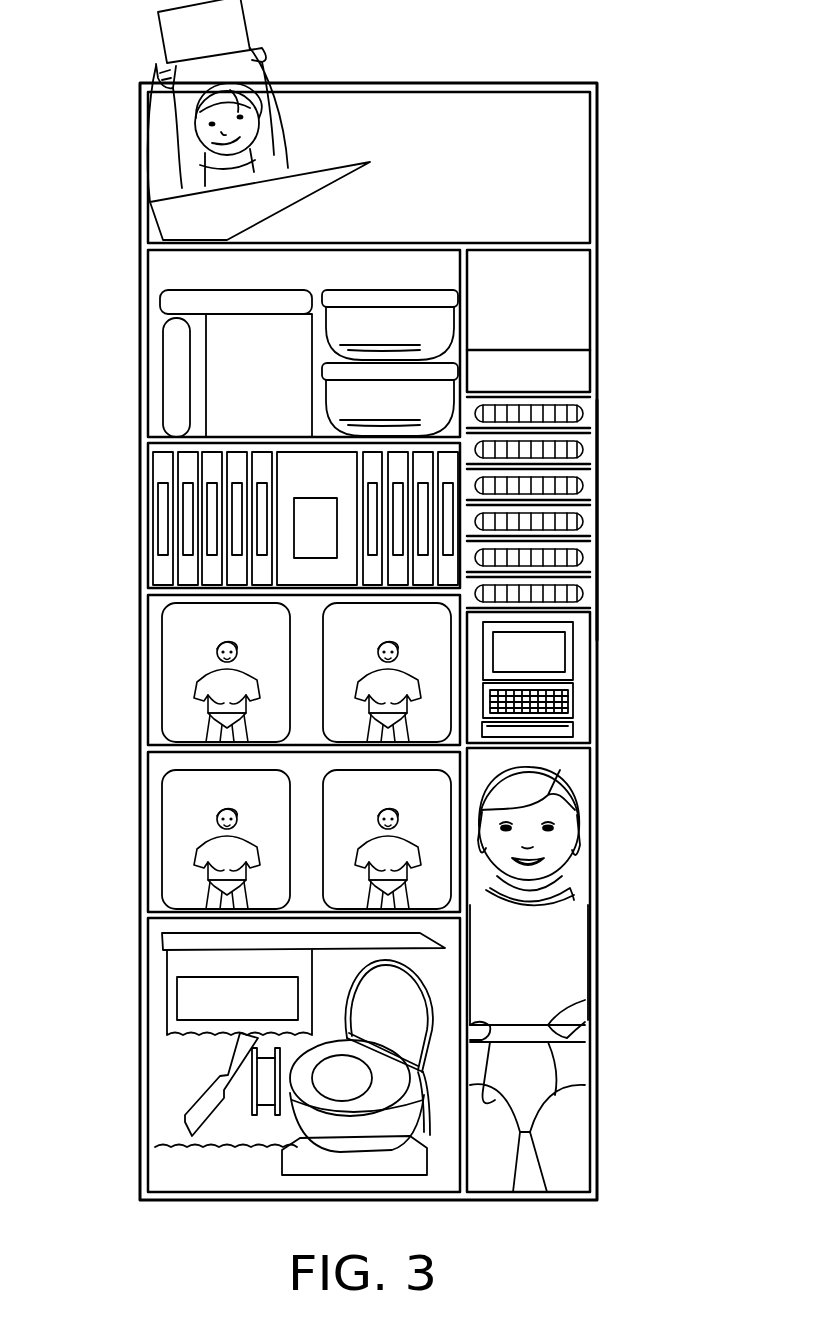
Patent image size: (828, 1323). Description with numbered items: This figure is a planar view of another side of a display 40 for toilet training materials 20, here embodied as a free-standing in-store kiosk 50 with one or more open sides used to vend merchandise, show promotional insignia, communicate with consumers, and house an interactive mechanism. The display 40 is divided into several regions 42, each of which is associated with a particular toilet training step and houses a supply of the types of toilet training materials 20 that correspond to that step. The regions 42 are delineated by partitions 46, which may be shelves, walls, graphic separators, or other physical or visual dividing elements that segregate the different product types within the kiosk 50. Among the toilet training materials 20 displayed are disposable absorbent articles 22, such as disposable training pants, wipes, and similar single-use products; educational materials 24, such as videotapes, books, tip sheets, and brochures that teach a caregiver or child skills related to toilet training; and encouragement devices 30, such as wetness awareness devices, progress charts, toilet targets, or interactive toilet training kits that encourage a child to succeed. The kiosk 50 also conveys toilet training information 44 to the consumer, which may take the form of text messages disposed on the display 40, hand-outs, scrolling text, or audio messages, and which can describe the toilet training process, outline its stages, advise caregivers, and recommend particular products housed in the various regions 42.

The toilet training materials 20 is at (207, 640).
The disposable absorbent articles 22 is at (177, 868).
The educational materials 24 is at (211, 500).
The encouragement devices 30 is at (335, 340).
The display 40 is at (628, 268).
The region 42 is at (628, 723).
The toilet training information 44 is at (566, 443).
The partition 46 is at (428, 755).
The kiosk 50 is at (597, 522).